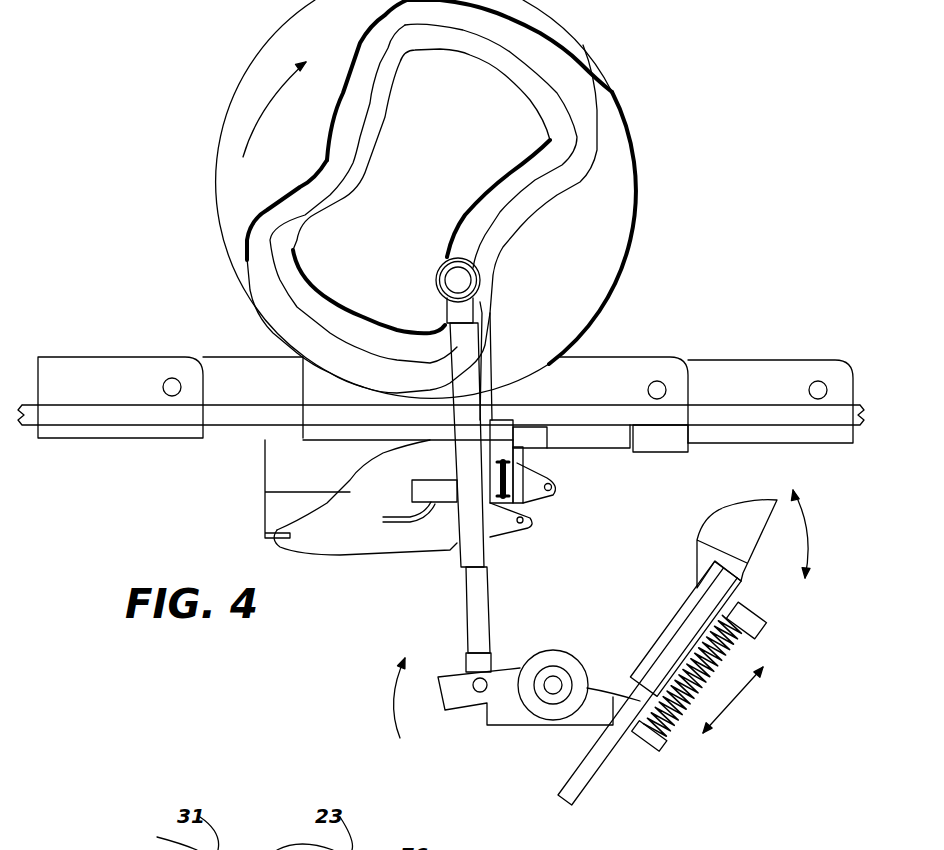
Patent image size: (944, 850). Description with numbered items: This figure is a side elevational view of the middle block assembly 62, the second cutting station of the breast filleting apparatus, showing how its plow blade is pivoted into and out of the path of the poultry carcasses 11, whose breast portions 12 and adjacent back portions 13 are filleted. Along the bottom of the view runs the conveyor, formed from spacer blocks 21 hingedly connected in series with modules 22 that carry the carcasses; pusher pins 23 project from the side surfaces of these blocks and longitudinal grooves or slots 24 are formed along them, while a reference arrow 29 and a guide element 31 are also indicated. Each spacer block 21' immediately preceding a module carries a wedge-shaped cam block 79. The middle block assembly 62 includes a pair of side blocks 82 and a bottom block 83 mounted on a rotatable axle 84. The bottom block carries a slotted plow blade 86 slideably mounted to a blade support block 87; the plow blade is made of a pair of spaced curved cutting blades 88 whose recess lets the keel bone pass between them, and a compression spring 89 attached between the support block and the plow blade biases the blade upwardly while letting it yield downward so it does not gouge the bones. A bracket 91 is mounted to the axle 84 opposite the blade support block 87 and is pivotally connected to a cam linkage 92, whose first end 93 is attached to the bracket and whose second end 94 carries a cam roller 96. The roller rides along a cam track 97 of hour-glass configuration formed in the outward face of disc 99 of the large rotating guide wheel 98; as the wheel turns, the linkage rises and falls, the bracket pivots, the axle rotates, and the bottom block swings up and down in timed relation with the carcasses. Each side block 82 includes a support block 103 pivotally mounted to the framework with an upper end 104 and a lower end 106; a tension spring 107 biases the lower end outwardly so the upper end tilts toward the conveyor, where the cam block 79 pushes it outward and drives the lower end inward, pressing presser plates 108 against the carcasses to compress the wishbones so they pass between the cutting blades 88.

The poultry carcasses 11 is at (350, 528).
The breast portions 12 is at (353, 557).
The back portions 13 is at (365, 462).
The spacer blocks 21 is at (170, 374).
The spacer blocks 21' is at (495, 381).
The modules 22 is at (337, 450).
The pusher pins 23 is at (165, 385).
The grooves or slots 24 is at (747, 407).
The feed direction arrow 29 is at (205, 556).
The guide rail 31 is at (83, 415).
The middle block assembly 62 is at (797, 465).
The cam block 79 is at (657, 440).
The side blocks 82 is at (433, 473).
The bottom block 83 is at (770, 628).
The axle or shaft 84 is at (622, 708).
The slotted plow blade 86 is at (737, 500).
The blade support block 87 is at (700, 567).
The curved cutting blades 88 is at (717, 525).
The compression spring 89 is at (685, 720).
The bracket 91 is at (543, 717).
The cam linkage 92 is at (467, 340).
The first end 93 is at (480, 663).
The second end 94 is at (450, 283).
The cam roller 96 is at (455, 258).
The cam track 97 is at (565, 75).
The guide wheel 98 is at (643, 165).
The disc 99 is at (572, 270).
The support block 103 is at (515, 433).
The upper end 104 is at (502, 433).
The lower end 106 is at (503, 503).
The tension spring 107 is at (527, 497).
The presser plates 108 is at (442, 497).